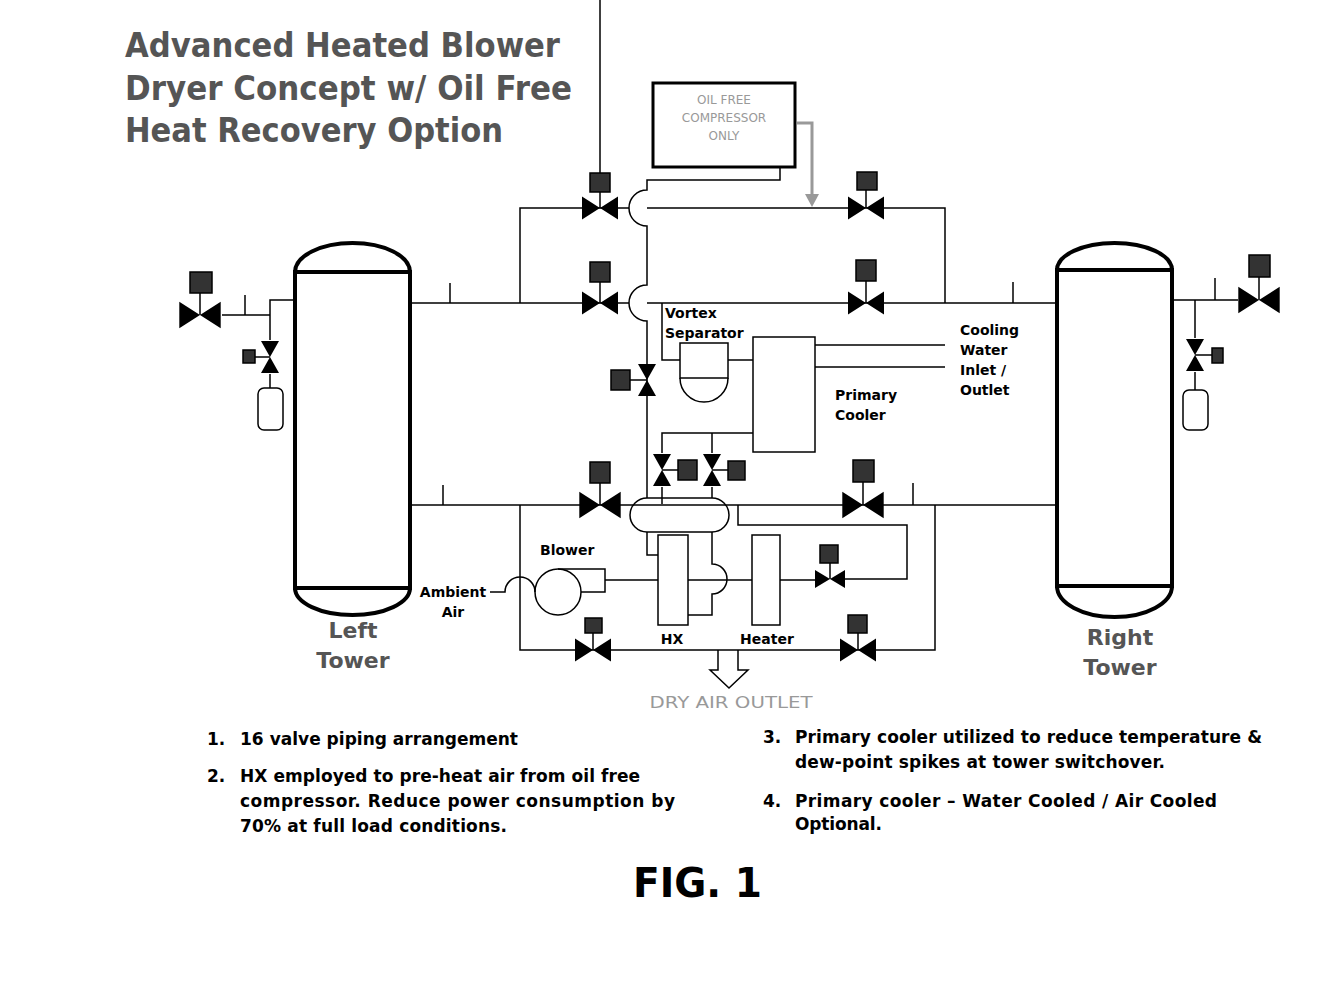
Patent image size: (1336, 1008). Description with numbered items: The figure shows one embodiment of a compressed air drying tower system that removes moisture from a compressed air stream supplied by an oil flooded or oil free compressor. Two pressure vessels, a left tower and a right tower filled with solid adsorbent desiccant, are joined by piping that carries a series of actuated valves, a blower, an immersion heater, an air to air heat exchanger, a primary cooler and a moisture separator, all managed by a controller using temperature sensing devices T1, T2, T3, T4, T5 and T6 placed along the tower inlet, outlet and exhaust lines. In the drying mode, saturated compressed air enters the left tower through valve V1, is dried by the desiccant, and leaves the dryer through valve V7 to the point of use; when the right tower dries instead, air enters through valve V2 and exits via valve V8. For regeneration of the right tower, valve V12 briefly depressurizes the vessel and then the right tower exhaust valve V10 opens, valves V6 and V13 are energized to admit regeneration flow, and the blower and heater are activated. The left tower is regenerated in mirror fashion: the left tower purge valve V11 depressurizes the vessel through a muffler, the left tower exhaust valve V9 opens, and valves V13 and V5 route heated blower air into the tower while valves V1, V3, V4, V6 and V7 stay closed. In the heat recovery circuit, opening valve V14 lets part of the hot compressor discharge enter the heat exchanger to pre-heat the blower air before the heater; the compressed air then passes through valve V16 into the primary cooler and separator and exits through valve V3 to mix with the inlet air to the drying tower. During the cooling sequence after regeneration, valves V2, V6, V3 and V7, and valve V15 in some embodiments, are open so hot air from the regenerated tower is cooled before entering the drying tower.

The valve V1 is at (600, 110).
The valve V2 is at (866, 182).
The valve V3 is at (600, 275).
The valve V4 is at (866, 275).
The valve V5 is at (599, 477).
The valve V6 is at (862, 476).
The valve V7 is at (593, 652).
The valve V8 is at (858, 649).
The left tower exhaust valve V9 is at (199, 283).
The right tower exhaust valve V10 is at (1258, 273).
The left tower purge valve V11 is at (236, 357).
The valve V12 is at (1225, 355).
The valve V13 is at (850, 565).
The valve V14 is at (611, 380).
The valve V15 is at (677, 461).
The valve V16 is at (745, 470).
The temperature sensing device T1 is at (450, 281).
The temperature sensing device T2 is at (1013, 281).
The temperature sensing device T3 is at (443, 483).
The temperature sensing device T4 is at (913, 482).
The temperature sensing device T5 is at (244, 292).
The temperature sensing device T6 is at (1215, 277).